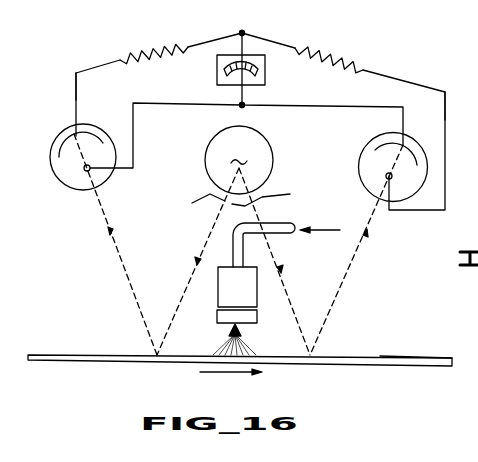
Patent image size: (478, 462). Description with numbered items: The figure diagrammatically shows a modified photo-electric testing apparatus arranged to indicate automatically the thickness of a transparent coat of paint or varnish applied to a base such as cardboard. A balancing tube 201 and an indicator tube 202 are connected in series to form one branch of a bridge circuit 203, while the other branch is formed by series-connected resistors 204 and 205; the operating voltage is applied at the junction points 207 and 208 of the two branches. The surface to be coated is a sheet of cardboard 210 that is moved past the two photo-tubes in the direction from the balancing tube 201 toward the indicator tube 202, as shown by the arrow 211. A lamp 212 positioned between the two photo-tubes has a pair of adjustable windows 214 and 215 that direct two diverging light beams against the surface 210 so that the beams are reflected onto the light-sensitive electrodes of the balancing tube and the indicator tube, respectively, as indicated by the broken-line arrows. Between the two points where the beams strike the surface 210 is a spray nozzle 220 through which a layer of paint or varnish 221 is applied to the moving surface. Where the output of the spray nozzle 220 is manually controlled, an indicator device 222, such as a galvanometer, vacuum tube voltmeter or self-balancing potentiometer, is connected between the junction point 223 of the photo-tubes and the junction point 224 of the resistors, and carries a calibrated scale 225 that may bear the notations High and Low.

The balancing tube 201 is at (67, 176).
The indicator tube 202 is at (366, 168).
The bridge circuit 203 is at (392, 88).
The resistor 204 is at (163, 46).
The resistor 205 is at (376, 38).
The junction point 207 is at (76, 73).
The junction point 208 is at (467, 67).
The sheet of cardboard 210 is at (78, 332).
The arrow 211 is at (240, 375).
The lamp 212 is at (265, 148).
The adjustable window 214 is at (210, 199).
The adjustable window 215 is at (278, 196).
The spray nozzle 220 is at (248, 318).
The layer of paint or varnish 221 is at (412, 341).
The indicator device 222 is at (268, 56).
The junction point 223 is at (241, 106).
The junction point 224 is at (265, 11).
The calibrated scale 225 is at (256, 63).